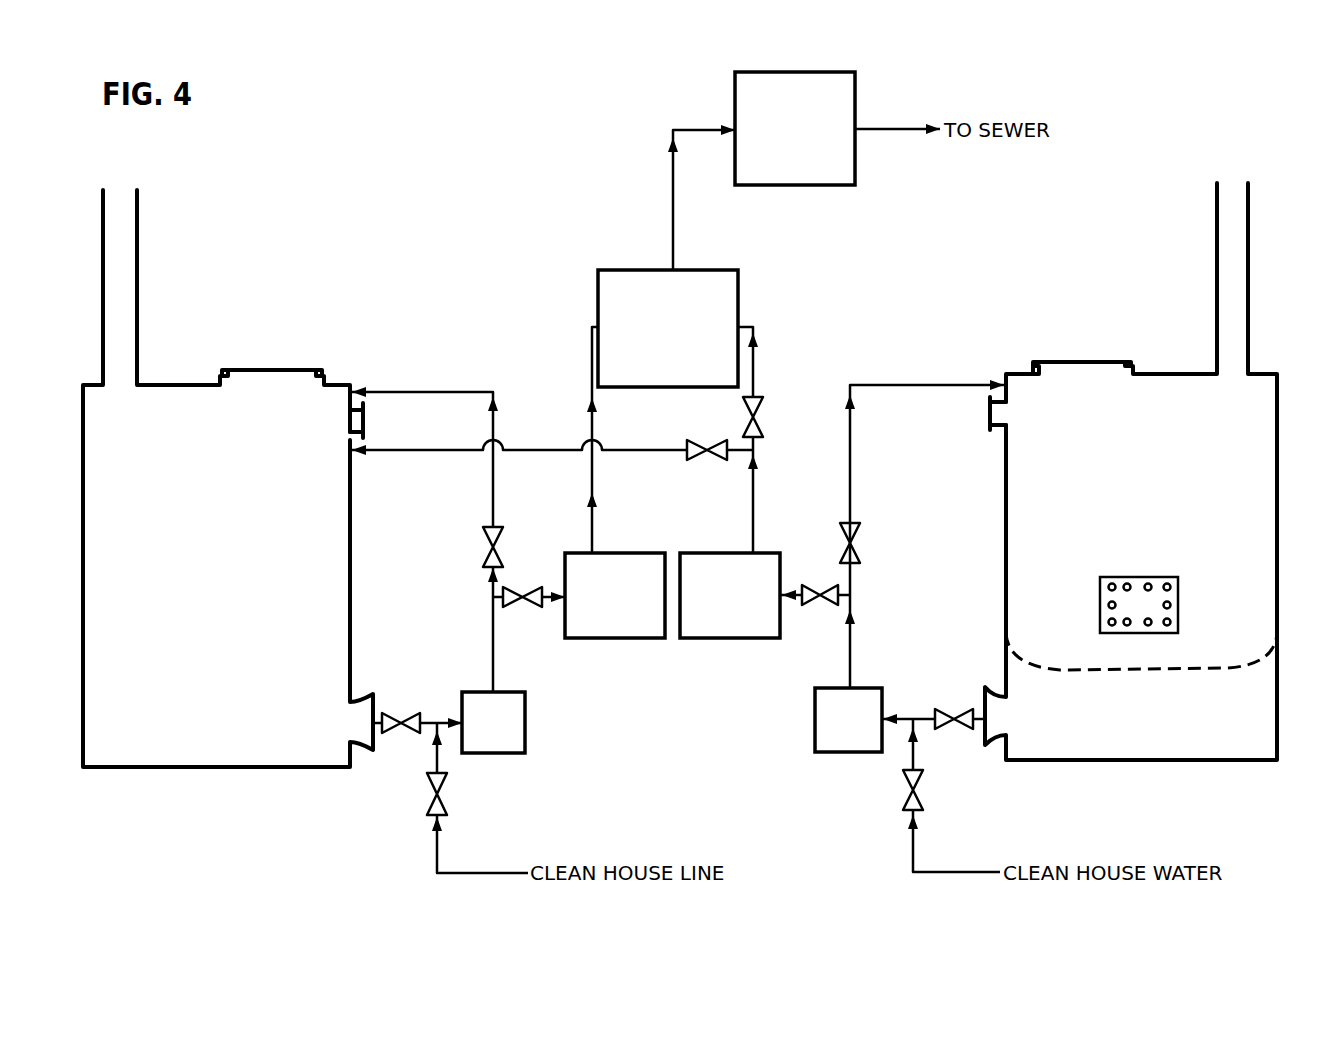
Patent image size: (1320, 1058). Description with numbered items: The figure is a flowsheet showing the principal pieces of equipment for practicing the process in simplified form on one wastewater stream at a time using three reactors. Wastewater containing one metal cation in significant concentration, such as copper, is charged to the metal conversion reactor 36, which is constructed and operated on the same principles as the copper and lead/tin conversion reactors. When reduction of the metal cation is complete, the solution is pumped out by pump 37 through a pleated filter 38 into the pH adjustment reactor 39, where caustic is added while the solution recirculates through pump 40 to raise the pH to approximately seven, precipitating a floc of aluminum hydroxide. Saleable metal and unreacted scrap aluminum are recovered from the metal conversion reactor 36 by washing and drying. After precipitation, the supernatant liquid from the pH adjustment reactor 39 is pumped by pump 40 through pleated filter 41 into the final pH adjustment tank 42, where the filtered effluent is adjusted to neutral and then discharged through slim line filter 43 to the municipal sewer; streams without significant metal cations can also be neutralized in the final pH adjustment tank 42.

The metal conversion reactor 36 is at (1263, 403).
The pump 37 is at (840, 740).
The pleated filter 38 is at (737, 630).
The pH adjustment reactor 39 is at (243, 745).
The pump 40 is at (507, 745).
The pleated filter 41 is at (622, 560).
The final pH adjustment tank 42 is at (630, 278).
The slim line filter 43 is at (845, 105).